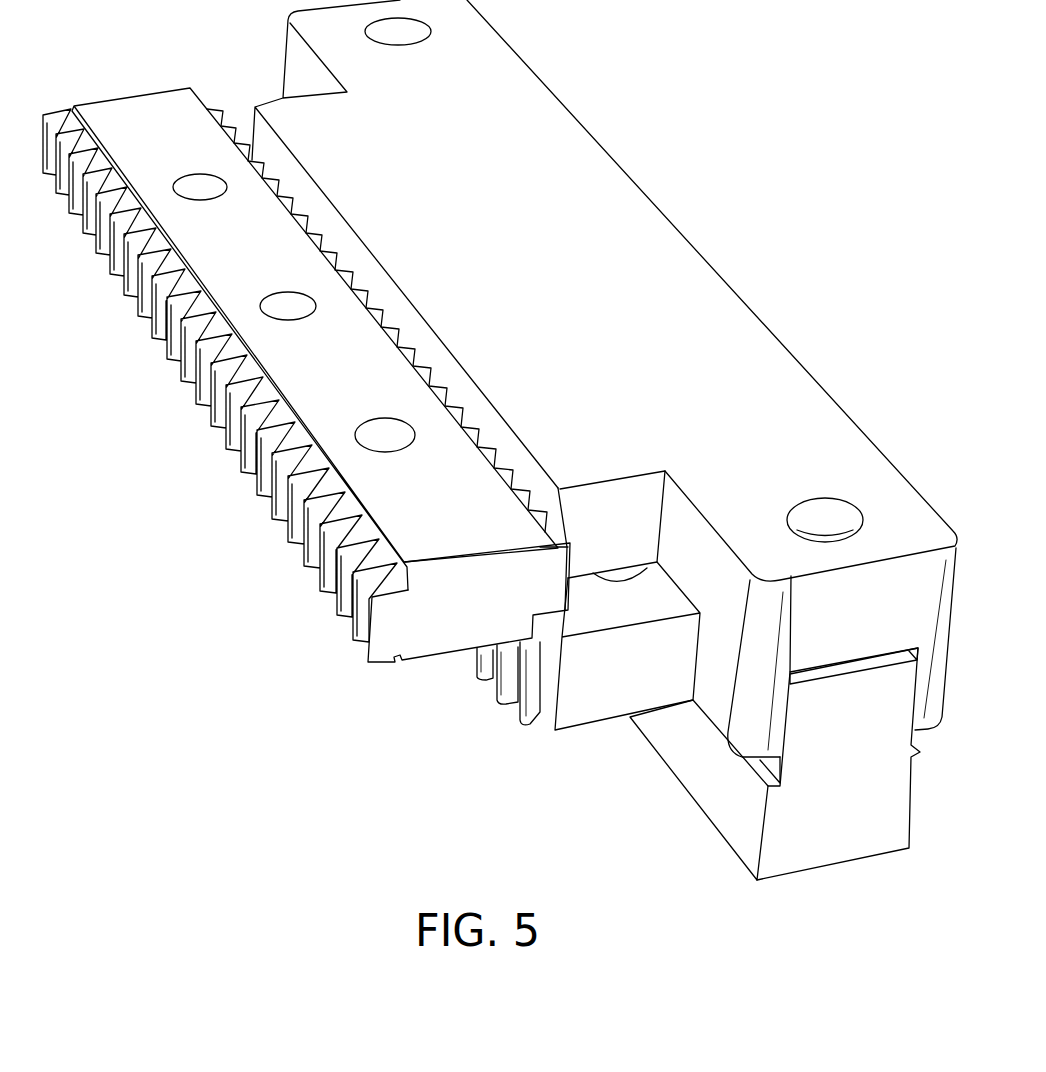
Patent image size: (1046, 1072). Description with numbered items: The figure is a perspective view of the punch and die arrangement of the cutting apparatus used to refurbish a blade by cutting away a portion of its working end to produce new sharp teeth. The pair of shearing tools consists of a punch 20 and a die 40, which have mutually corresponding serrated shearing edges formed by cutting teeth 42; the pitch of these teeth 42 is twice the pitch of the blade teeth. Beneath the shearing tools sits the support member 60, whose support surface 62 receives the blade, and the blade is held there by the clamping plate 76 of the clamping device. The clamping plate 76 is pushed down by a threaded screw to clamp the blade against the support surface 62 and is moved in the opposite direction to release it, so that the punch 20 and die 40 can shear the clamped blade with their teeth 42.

The punch 20 is at (120, 77).
The die 40 is at (585, 747).
The cutting teeth 42 is at (500, 467).
The support member 60 is at (677, 801).
The support surface 62 is at (818, 670).
The clamping plate 76 is at (631, 141).